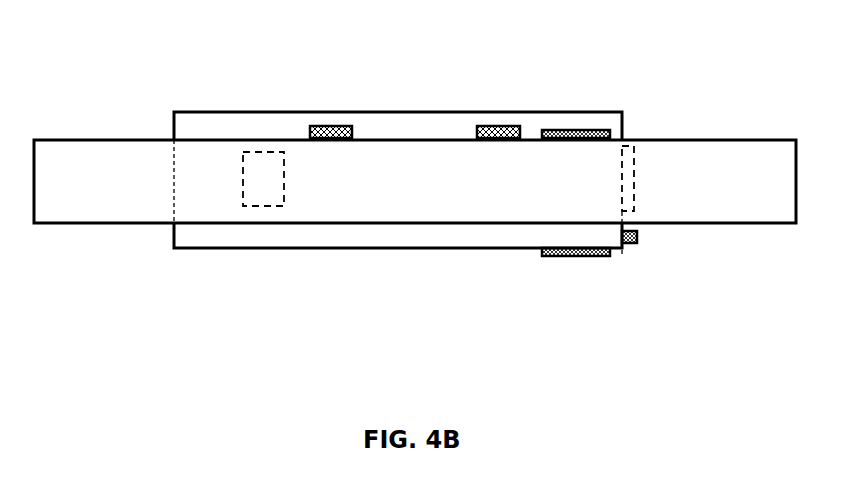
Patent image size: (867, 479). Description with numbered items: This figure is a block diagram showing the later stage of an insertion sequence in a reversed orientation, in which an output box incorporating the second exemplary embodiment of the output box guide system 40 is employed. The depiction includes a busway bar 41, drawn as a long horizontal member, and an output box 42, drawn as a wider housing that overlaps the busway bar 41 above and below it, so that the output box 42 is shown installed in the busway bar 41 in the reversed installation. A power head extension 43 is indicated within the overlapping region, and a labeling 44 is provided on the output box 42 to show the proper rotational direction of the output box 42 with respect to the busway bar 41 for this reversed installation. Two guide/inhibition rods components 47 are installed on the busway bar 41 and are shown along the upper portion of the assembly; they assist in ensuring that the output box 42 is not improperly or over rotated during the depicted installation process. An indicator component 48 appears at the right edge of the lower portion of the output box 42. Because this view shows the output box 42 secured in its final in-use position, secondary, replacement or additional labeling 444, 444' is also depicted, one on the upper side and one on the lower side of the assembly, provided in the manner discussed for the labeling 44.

The output box guide system 40 is at (80, 57).
The busway bar 41 is at (738, 192).
The output box 42 is at (172, 235).
The power head extension 43 is at (263, 182).
The labeling 44 is at (627, 180).
The guide/inhibition rods components 47 is at (332, 126).
The additional labeling 444 is at (576, 85).
The additional labeling 444' is at (556, 304).
The indicator component 48 is at (628, 243).